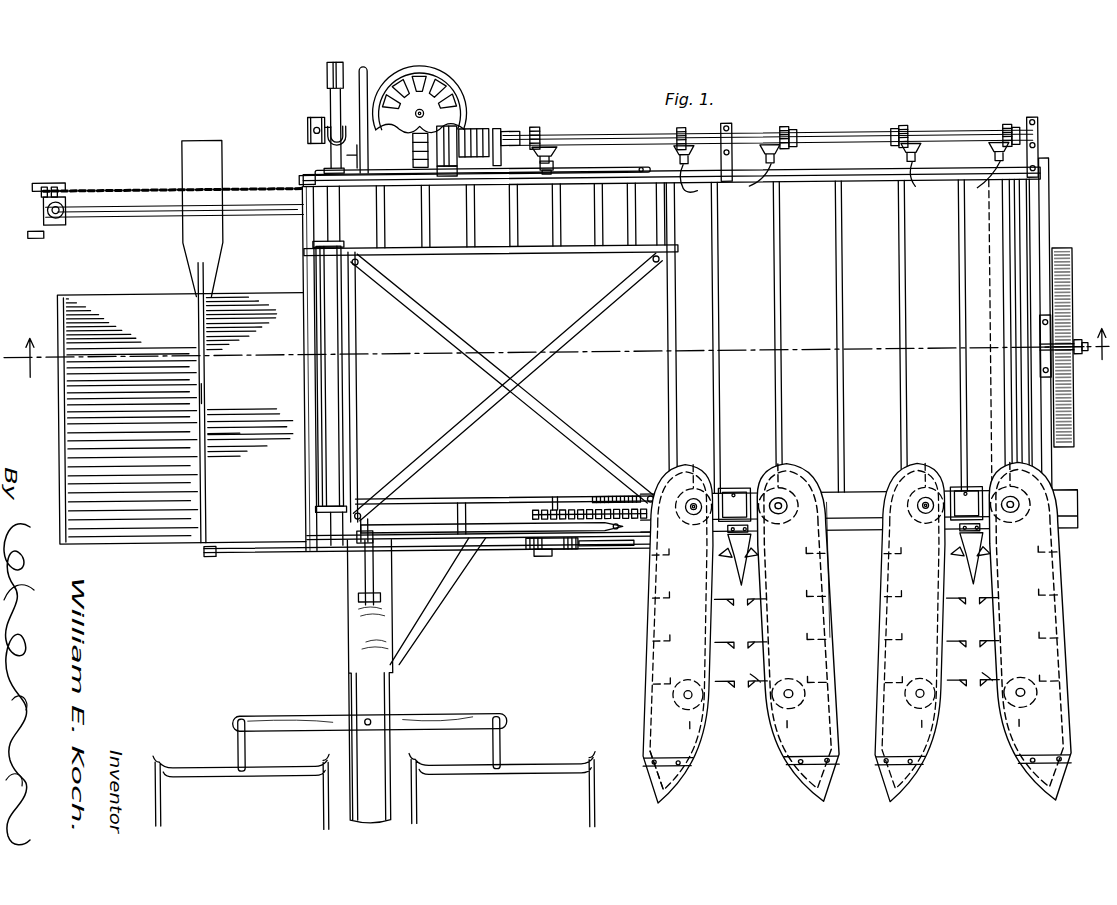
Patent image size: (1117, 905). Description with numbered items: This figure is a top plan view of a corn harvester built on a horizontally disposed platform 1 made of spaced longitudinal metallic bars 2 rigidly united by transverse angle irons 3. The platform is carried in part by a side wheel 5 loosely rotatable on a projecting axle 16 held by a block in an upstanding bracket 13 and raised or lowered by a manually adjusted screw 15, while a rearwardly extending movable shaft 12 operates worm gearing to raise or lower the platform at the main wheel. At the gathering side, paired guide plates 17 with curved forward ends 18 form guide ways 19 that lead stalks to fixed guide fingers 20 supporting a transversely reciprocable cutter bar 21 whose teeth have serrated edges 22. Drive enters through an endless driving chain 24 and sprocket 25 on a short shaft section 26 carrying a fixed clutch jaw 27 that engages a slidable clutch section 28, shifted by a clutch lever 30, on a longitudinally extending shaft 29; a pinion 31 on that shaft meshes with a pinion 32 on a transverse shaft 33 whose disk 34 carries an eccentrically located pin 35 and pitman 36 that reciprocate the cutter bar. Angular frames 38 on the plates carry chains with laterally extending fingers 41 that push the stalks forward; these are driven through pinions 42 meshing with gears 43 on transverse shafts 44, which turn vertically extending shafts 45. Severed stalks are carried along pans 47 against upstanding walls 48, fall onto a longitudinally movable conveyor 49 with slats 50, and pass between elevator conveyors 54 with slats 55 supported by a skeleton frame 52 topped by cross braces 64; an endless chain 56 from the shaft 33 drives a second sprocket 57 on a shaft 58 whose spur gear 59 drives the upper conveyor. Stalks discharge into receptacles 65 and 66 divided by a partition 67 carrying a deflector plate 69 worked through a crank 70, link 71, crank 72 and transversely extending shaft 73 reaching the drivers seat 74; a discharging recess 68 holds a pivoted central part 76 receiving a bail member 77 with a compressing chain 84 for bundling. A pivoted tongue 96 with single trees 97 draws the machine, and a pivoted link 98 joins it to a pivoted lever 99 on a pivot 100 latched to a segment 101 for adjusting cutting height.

The platform 1 is at (825, 166).
The longitudinally extending metallic bars 2 is at (866, 164).
The transversely extending angle irons 3 is at (1053, 210).
The side wheel 5 is at (1074, 412).
The movable shaft 12 is at (333, 132).
The upstanding bracket 13 is at (1052, 325).
The manually adjusted screw 15 is at (1062, 349).
The projecting axle 16 is at (1084, 358).
The guide plates 17 is at (746, 604).
The curved forward ends 18 is at (690, 755).
The guide ways 19 is at (813, 738).
The fixed guide fingers 20 is at (747, 572).
The cutter bar 21 is at (855, 534).
The serrated edges 22 is at (749, 553).
The endless driving chain 24 is at (440, 172).
The sprocket 25 is at (456, 128).
The short shaft section 26 is at (418, 150).
The fixed clutch jaw 27 is at (482, 140).
The slidable clutch section 28 is at (506, 140).
The longitudinally extending shaft 29 is at (600, 135).
The clutch lever 30 is at (512, 148).
The pinion 31 is at (545, 136).
The pinion 32 is at (562, 158).
The shaft 33 is at (548, 178).
The disk 34 is at (528, 551).
The eccentrically located pin 35 is at (543, 557).
The pitman 36 is at (592, 549).
The angular frames 38 is at (826, 630).
The laterally extending fingers 41 is at (732, 682).
The pinions 42 is at (682, 138).
The gears 43 is at (680, 158).
The transversely extending shafts 44 is at (840, 185).
The vertically extending shafts 45 is at (696, 505).
The pans 47 is at (722, 490).
The upstanding walls 48 is at (735, 490).
The longitudinally movable conveyor 49 is at (871, 336).
The slats 50 is at (900, 262).
The skeleton frame 52 is at (312, 176).
The elevator conveyors 54 is at (520, 215).
The slats 55 is at (582, 246).
The endless chain 56 is at (530, 514).
The second sprocket 57 is at (628, 534).
The shaft 58 is at (656, 496).
The spur gear 59 is at (608, 496).
The cross braces 64 is at (470, 365).
The receptacle 65 is at (254, 420).
The receptacle 66 is at (181, 418).
The partition 67 is at (206, 392).
The discharging recess 68 is at (210, 280).
The deflector plate 69 is at (200, 430).
The crank 70 is at (204, 549).
The link 71 is at (240, 550).
The crank 72 is at (448, 558).
The transversely extending shaft 73 is at (462, 500).
The drivers seat 74 is at (447, 77).
The pivoted central part 76 is at (215, 160).
The bail member 77 is at (148, 214).
The compressing chain 84 is at (165, 185).
The pivoted tongue 96 is at (347, 646).
The single trees 97 is at (440, 712).
The pivoted link 98 is at (356, 597).
The pivoted lever 99 is at (372, 100).
The pivot 100 is at (376, 532).
The segment 101 is at (372, 518).